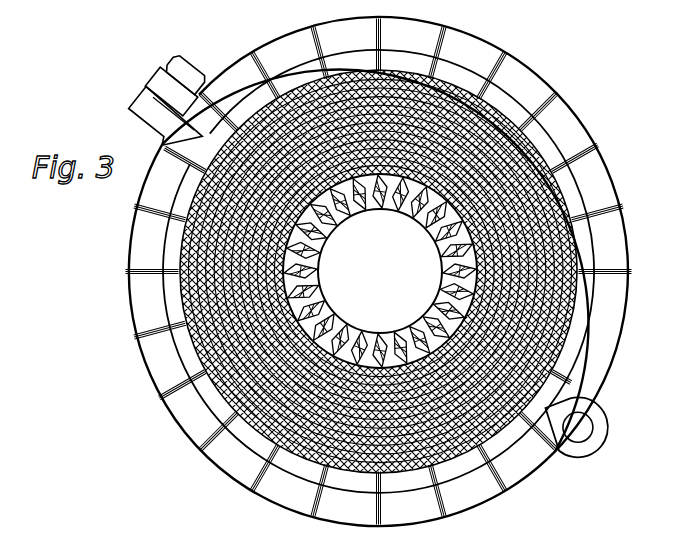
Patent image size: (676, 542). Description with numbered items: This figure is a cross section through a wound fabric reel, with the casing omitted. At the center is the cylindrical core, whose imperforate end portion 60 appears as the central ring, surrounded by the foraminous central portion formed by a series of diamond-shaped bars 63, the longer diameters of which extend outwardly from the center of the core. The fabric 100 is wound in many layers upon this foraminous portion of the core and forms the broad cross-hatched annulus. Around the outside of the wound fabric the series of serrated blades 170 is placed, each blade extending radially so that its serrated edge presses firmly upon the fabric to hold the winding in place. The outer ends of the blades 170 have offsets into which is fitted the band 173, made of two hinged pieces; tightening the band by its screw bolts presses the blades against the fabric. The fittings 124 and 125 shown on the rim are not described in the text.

The end portion of the core 60 is at (318, 283).
The diamond-shaped bars 63 is at (440, 270).
The fabric 100 is at (521, 96).
The bearing housing 124 is at (586, 427).
The mounting bracket 125 is at (183, 72).
The serrated blades 170 is at (418, 47).
The band 173 is at (138, 291).